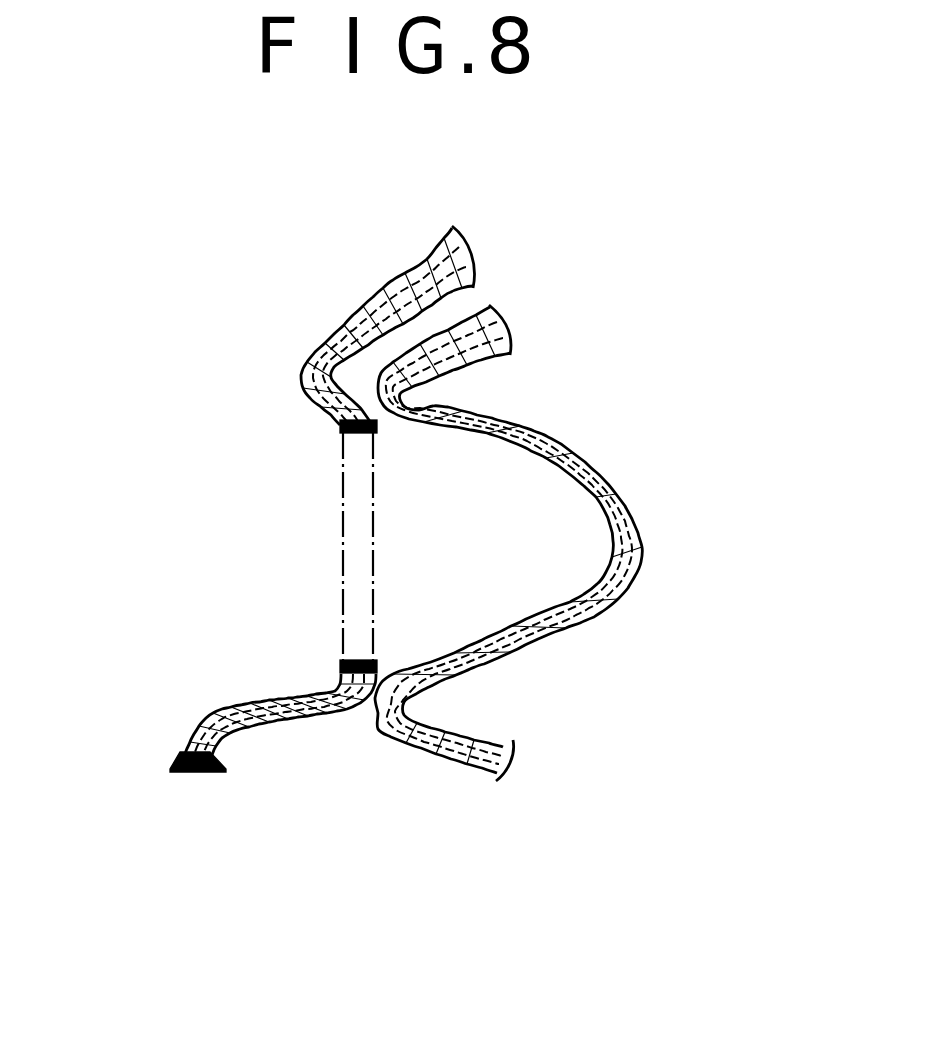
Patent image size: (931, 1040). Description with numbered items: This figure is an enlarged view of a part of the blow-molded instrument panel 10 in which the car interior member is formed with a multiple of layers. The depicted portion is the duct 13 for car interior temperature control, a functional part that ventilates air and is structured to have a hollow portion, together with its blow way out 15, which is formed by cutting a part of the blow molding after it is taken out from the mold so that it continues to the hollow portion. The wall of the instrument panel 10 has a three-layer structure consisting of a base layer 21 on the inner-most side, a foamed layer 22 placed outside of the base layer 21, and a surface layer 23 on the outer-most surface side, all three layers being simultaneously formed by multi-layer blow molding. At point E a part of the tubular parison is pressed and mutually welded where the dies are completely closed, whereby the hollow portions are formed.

The instrument panel 10 is at (200, 304).
The duct 13 is at (530, 497).
The blow way out 15 is at (352, 589).
The base layer 21 is at (643, 508).
The foamed layer 22 is at (642, 550).
The surface layer 23 is at (633, 597).
The point E is at (327, 415).